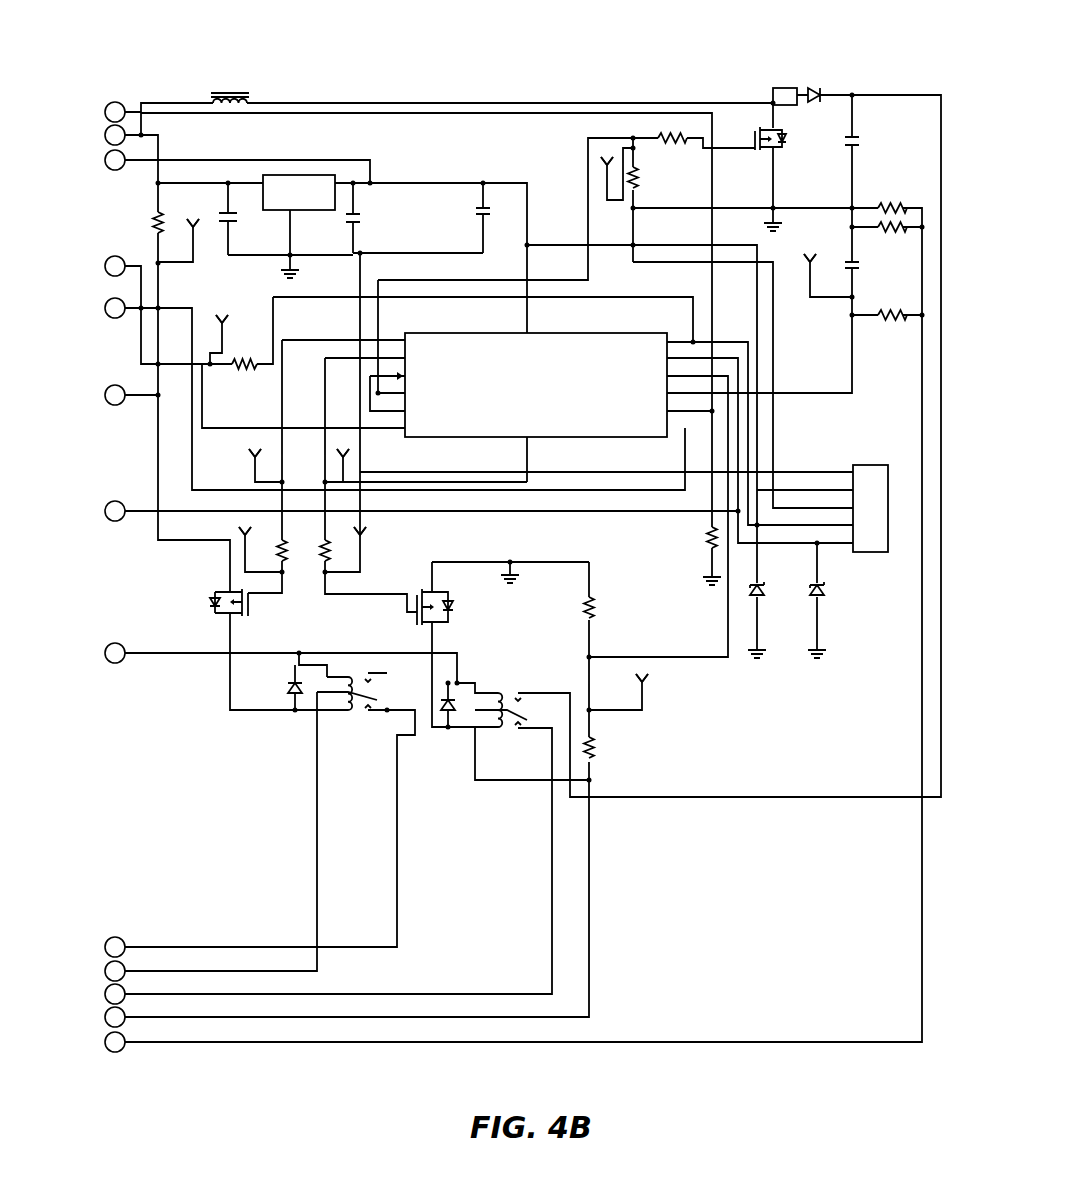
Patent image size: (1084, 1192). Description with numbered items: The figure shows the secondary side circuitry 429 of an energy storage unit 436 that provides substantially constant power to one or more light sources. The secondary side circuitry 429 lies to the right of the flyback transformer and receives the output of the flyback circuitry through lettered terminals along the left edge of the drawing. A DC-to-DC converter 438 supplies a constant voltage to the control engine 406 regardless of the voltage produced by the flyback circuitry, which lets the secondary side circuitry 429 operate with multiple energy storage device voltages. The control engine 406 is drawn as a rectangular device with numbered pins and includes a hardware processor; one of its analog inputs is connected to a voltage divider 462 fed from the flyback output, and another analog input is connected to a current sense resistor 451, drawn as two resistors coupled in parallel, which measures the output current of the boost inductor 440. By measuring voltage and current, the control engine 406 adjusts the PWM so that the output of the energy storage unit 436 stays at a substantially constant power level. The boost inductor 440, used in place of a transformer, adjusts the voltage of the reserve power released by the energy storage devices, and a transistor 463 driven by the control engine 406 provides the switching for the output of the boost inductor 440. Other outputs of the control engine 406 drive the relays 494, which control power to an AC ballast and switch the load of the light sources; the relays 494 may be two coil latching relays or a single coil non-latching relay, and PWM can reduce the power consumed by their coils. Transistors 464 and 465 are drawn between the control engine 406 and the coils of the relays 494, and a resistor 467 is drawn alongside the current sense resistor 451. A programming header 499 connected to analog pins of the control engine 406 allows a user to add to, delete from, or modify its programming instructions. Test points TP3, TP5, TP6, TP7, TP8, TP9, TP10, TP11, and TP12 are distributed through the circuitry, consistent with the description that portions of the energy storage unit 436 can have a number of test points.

The energy storage unit 436 is at (114, 45).
The secondary side circuitry 429 is at (86, 240).
The boost inductor 440 is at (232, 96).
The DC-to-DC converter 438 is at (309, 171).
The voltage divider 462 is at (212, 251).
The control engine 406 is at (582, 442).
The programming header 499 is at (871, 557).
The transistor 463 is at (760, 127).
The current sense resistor 451 is at (893, 206).
The resistor 467 is at (888, 320).
The transistor 464 is at (214, 596).
The transistor 465 is at (450, 617).
The relays 494 is at (498, 738).
The test point TP3 is at (190, 219).
The test point TP5 is at (223, 317).
The test point TP6 is at (255, 448).
The test point TP7 is at (343, 448).
The test point TP8 is at (245, 525).
The test point TP9 is at (360, 525).
The test point TP10 is at (607, 156).
The test point TP11 is at (810, 253).
The test point TP12 is at (642, 673).